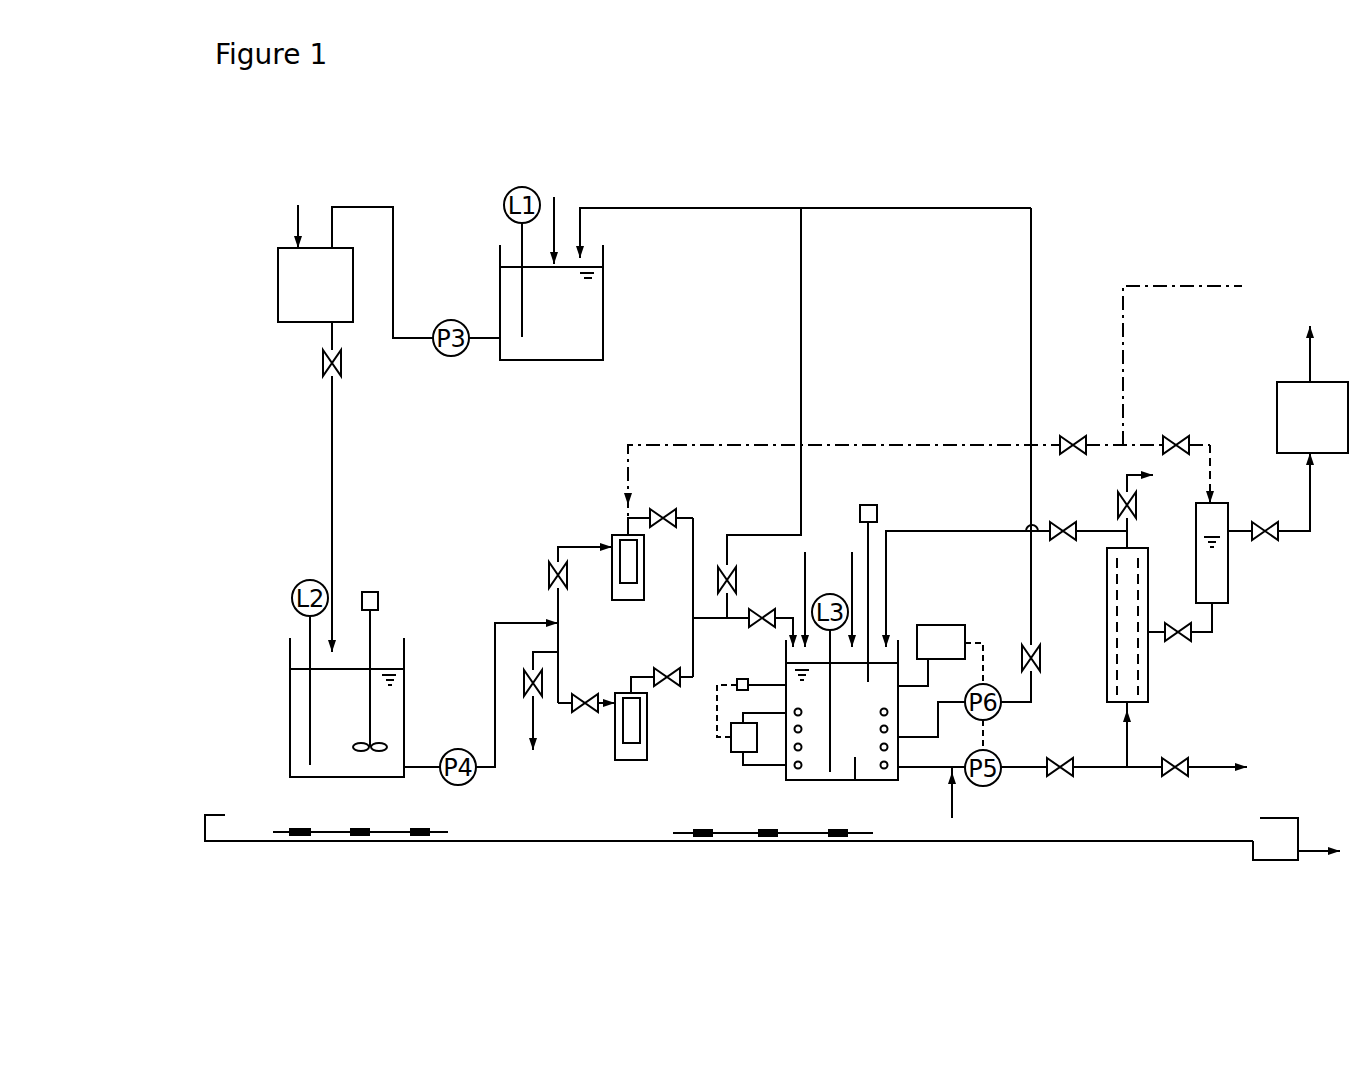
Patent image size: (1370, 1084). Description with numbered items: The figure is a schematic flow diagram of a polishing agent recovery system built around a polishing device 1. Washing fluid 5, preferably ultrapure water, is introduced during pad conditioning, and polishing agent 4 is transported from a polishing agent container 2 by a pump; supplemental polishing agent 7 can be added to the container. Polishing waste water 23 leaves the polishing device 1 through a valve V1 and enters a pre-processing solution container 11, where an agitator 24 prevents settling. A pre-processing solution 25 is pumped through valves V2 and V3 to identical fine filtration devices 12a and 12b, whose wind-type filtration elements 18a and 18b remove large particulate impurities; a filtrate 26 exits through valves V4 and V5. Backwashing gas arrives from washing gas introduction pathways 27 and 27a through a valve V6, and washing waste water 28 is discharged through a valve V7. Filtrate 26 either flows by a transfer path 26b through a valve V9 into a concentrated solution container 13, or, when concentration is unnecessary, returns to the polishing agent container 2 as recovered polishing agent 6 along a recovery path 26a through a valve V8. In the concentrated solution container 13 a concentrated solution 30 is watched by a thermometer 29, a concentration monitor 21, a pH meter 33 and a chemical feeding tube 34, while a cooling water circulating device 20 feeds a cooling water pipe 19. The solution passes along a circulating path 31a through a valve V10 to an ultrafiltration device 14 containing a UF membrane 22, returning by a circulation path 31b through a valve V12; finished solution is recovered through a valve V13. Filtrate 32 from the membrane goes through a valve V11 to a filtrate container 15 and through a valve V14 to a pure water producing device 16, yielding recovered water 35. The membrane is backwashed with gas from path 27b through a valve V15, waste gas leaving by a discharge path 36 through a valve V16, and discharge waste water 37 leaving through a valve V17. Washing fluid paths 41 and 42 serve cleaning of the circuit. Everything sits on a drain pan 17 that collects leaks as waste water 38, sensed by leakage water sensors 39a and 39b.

The polishing device 1 is at (278, 280).
The polishing agent container 2 is at (603, 317).
The polishing agent 4 is at (393, 242).
The washing fluid 5 is at (297, 213).
The recovered polishing agent 6 is at (618, 207).
The supplemental polishing agent 7 is at (556, 210).
The pre-processing solution container 11 is at (290, 708).
The fine filtration device 12a is at (597, 560).
The fine filtration device 12b is at (635, 736).
The concentrated solution container 13 is at (898, 778).
The ultrafiltration device 14 is at (1148, 690).
The filtrate container 15 is at (1228, 595).
The pure water producing device 16 is at (1278, 390).
The drain pan 17 is at (645, 841).
The wind-type filtration element 18a is at (615, 576).
The wind-type filtration element 18b is at (648, 738).
The cooling water pipe 19 is at (797, 780).
The cooling water circulating device 20 is at (735, 755).
The concentration monitor 21 is at (942, 625).
The UF membrane 22 is at (1114, 614).
The polishing waste water 23 is at (332, 483).
The agitator 24 is at (378, 598).
The pre-processing solution 25 is at (495, 718).
The filtrate 26 is at (698, 612).
The recovery path 26a is at (1031, 287).
The transfer path 26b is at (791, 624).
The washing gas introduction pathway 27 is at (1190, 286).
The washing gas introduction pathway 27a is at (912, 445).
The washing gas introduction path 27b is at (1212, 455).
The washing waste water 28 is at (528, 728).
The thermometer 29 is at (736, 693).
The concentrated solution 30 is at (857, 780).
The circulating path 31a is at (1020, 770).
The circulation path 31b is at (977, 531).
The filtrate 32 is at (1212, 638).
The pH meter 33 is at (878, 508).
The chemical feeding tube 34 is at (852, 575).
The recovered water 35 is at (1318, 352).
The discharge path 36 is at (1126, 478).
The discharge waste water 37 is at (1210, 772).
The waste water 38 is at (1308, 850).
The leakage water sensor 39a is at (395, 841).
The leakage water sensor 39b is at (802, 841).
The washing fluid path 41 is at (804, 572).
The washing fluid path 42 is at (955, 806).
The valve V1 is at (315, 350).
The valve V2 is at (560, 623).
The valve V3 is at (586, 689).
The valve V4 is at (669, 501).
The valve V5 is at (672, 659).
The valve V6 is at (1072, 430).
The valve V7 is at (523, 674).
The valve V8 is at (744, 589).
The valve V9 is at (749, 605).
The valve V10 is at (1060, 751).
The valve V11 is at (1174, 650).
The valve V12 is at (1063, 548).
The valve V13 is at (1046, 673).
The valve V14 is at (1271, 513).
The valve V15 is at (1178, 430).
The valve V16 is at (1150, 520).
The valve V17 is at (1176, 751).